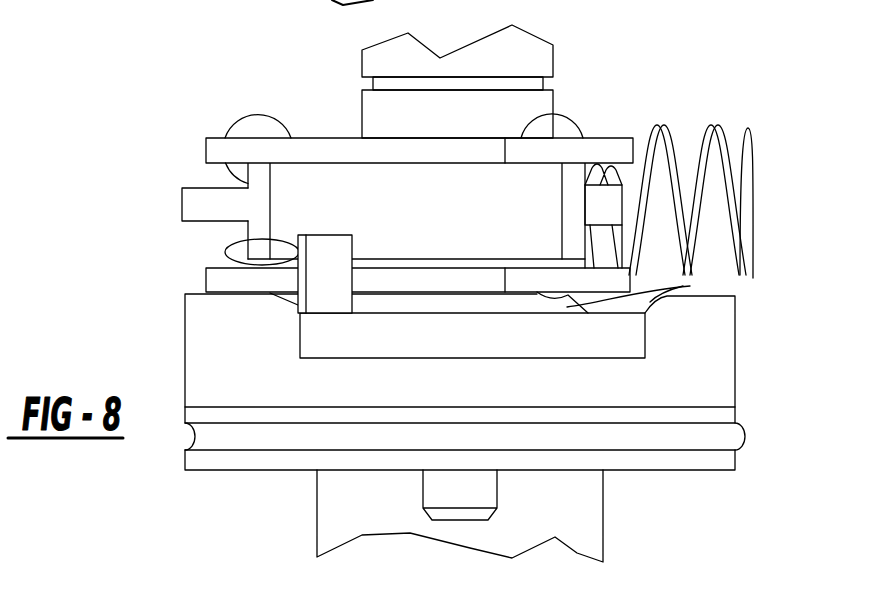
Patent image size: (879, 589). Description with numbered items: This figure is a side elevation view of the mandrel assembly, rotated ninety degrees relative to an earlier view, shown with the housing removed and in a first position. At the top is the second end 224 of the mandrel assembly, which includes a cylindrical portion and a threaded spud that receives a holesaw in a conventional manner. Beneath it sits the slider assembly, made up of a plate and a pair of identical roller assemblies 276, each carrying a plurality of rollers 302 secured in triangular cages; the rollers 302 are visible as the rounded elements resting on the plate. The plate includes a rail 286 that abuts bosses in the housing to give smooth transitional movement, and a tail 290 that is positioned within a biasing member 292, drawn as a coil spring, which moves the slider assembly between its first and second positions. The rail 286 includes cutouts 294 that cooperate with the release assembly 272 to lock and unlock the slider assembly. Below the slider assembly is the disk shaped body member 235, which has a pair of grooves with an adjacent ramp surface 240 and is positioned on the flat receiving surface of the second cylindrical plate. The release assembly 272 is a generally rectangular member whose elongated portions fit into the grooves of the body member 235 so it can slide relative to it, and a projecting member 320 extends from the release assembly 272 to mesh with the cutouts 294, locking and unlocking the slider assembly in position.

The second end 224 is at (560, 57).
The disk shaped body member 235 is at (692, 353).
The ramp surface 240 is at (690, 286).
The release assembly 272 is at (338, 340).
The roller assemblies 276 is at (185, 147).
The rail 286 is at (330, 197).
The tail 290 is at (605, 208).
The biasing member 292 is at (675, 140).
The cutouts 294 is at (235, 240).
The rollers 302 is at (257, 127).
The projecting member 320 is at (332, 260).